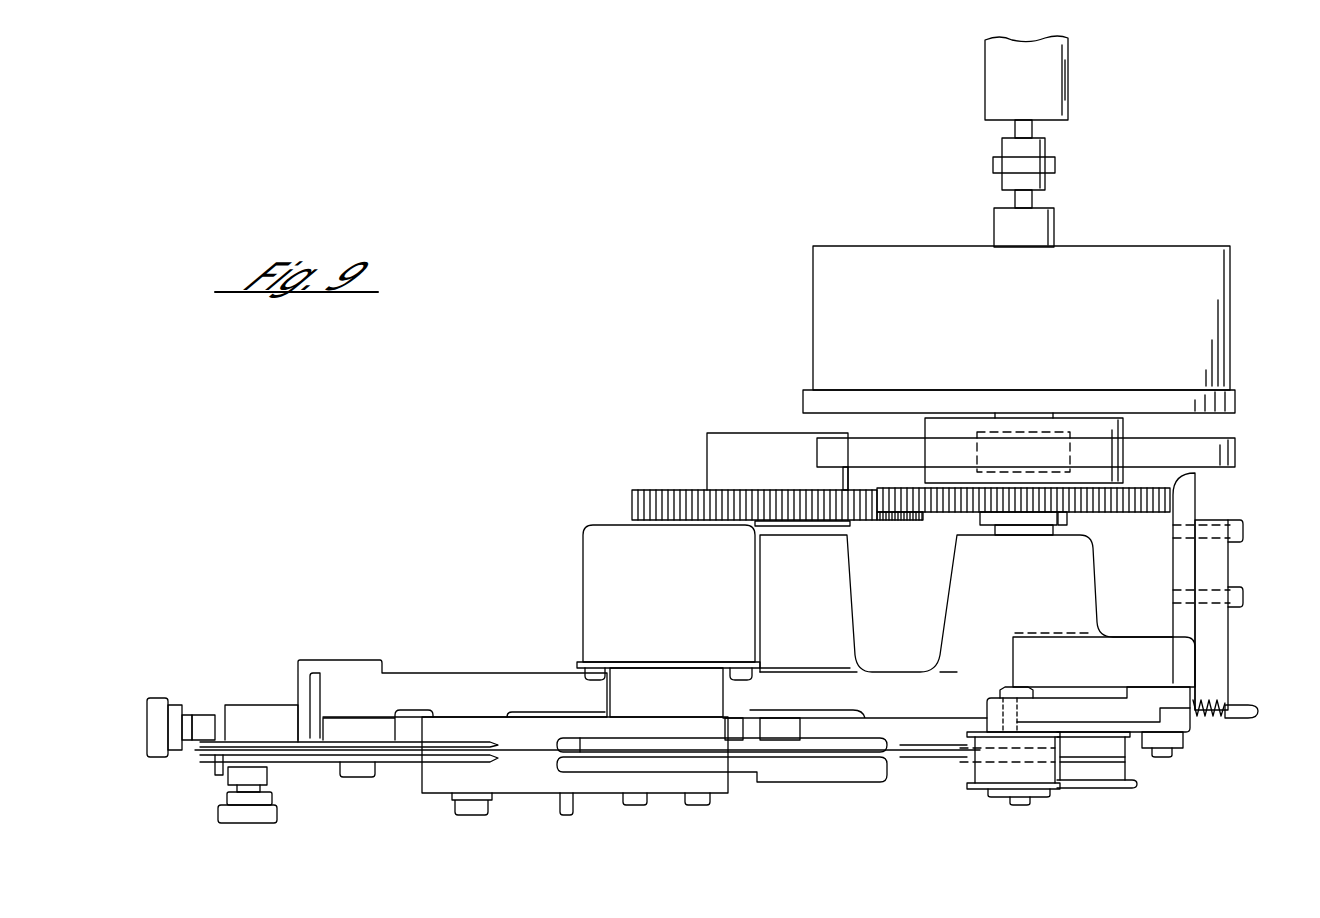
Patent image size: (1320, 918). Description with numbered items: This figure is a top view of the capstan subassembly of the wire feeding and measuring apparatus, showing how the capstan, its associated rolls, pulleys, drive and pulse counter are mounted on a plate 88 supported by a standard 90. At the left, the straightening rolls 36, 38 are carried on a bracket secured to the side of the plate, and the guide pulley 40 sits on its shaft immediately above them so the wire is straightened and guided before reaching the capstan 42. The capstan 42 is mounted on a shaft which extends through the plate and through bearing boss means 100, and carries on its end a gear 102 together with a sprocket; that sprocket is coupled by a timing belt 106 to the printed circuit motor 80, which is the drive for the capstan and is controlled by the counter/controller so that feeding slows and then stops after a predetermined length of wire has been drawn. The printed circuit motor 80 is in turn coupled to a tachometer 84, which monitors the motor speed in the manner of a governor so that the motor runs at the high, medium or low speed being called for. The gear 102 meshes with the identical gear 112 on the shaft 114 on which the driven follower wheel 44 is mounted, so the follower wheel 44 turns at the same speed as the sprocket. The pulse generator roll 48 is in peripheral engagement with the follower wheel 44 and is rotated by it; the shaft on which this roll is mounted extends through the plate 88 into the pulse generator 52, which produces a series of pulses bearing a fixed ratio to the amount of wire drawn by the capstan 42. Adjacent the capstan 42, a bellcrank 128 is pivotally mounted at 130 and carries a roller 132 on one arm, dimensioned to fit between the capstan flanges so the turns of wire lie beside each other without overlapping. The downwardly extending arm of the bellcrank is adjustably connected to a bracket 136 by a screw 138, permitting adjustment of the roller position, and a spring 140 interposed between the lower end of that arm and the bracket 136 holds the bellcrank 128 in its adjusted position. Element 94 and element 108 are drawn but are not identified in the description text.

The straightening roll 36 is at (212, 778).
The straightening roll 38 is at (192, 762).
The guide pulley 40 is at (318, 757).
The capstan 42 is at (1112, 777).
The driven follower wheel 44 is at (835, 775).
The pulse generator roll 48 is at (655, 745).
The pulse generator 52 is at (590, 560).
The printed circuit motor 80 is at (1128, 265).
The tachometer 84 is at (1055, 90).
The plate 88 is at (503, 690).
The standard 90 is at (1197, 495).
The knob 94 is at (147, 728).
The bearing boss means 100 is at (1078, 580).
The gear 102 is at (1132, 510).
The timing belt 106 is at (1237, 452).
The coupling 108 is at (1030, 202).
The gear 112 is at (653, 490).
The shaft 114 is at (807, 528).
The bellcrank 128 is at (1085, 710).
The pivot 130 is at (1172, 752).
The roller 132 is at (985, 790).
The bracket 136 is at (1218, 643).
The screw 138 is at (1240, 708).
The spring 140 is at (1205, 722).